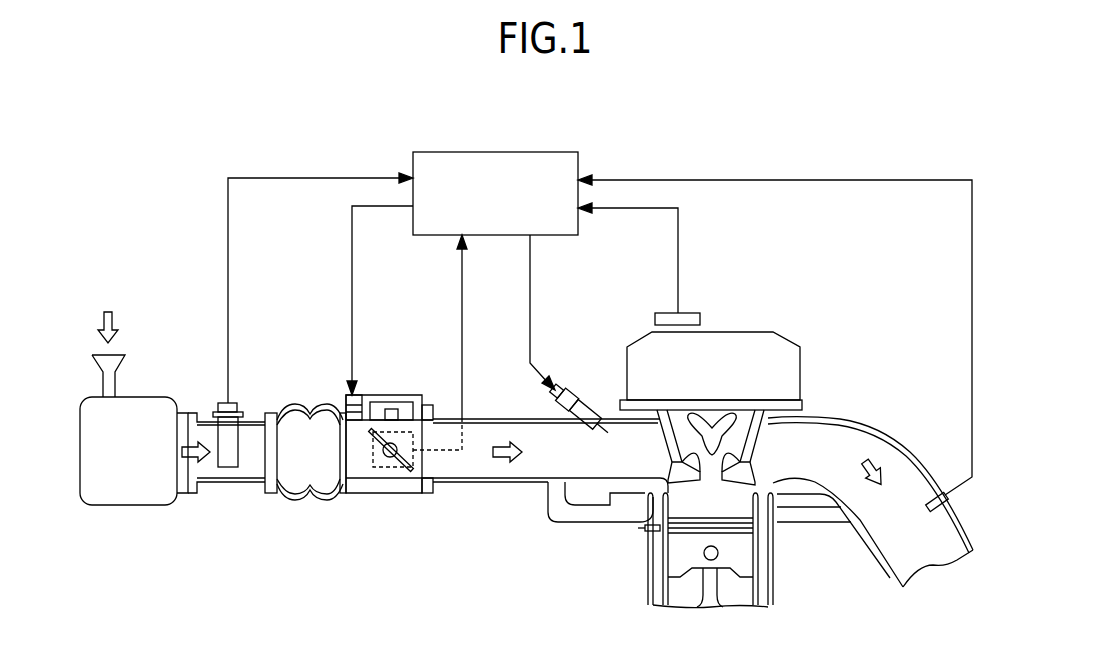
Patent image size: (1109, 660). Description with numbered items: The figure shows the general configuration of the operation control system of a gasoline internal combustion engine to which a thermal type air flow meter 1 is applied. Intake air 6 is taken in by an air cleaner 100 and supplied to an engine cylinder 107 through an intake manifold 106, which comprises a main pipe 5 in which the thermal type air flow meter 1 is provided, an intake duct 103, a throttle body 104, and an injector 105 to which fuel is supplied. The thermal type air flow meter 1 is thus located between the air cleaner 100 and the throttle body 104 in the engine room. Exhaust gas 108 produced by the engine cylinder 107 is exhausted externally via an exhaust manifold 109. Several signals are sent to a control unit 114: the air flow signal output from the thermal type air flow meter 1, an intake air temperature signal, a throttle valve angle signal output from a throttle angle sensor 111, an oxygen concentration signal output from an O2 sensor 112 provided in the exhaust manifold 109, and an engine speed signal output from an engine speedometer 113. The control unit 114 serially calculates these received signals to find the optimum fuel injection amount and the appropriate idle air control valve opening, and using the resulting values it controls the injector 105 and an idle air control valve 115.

The thermal type air flow meter 1 is at (217, 407).
The main pipe 5 is at (228, 485).
The intake air 6 is at (120, 322).
The air cleaner 100 is at (127, 507).
The intake duct 103 is at (307, 497).
The throttle body 104 is at (403, 487).
The injector 105 is at (572, 386).
The intake manifold 106 is at (493, 417).
The engine cylinder 107 is at (735, 495).
The exhaust gas 108 is at (875, 460).
The exhaust manifold 109 is at (832, 417).
The throttle angle sensor 111 is at (387, 467).
The O2 sensor 112 is at (938, 493).
The engine speedometer 113 is at (702, 318).
The control unit 114 is at (500, 152).
The idle air control valve 115 is at (343, 402).